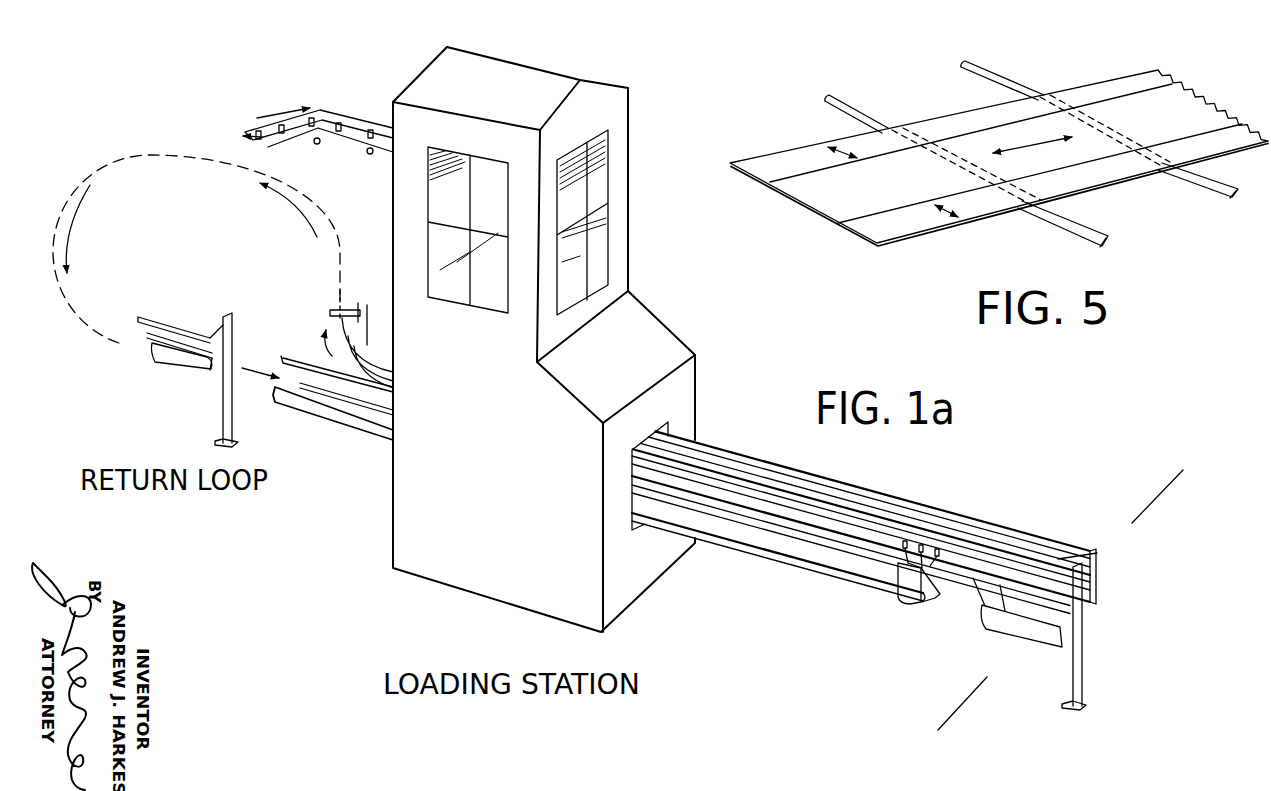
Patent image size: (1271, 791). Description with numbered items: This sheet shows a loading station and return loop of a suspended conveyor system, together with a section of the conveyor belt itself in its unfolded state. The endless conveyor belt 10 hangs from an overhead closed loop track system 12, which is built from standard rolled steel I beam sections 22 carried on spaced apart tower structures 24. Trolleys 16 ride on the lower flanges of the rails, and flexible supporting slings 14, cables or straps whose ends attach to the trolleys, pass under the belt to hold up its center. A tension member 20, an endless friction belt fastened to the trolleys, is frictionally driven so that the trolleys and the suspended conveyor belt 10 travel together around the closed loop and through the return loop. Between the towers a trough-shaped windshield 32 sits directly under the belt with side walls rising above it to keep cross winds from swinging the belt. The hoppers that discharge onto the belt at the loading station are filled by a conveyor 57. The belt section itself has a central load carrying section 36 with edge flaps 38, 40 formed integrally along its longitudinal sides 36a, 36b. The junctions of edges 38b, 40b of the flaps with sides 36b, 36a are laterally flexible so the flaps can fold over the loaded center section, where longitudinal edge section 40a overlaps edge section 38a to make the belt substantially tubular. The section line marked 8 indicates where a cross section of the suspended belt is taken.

In FIG. 1a, the section line 8- 8 is at (1137, 484).
In FIG. 1a, the endless conveyor belt 10 is at (174, 364).
In FIG. 1a, the overhead closed loop track system 12 is at (905, 497).
In FIG. 1a, the supporting slings 14 is at (897, 565).
In FIG. 5, the supporting slings 14 is at (1078, 231).
In FIG. 1a, the trolleys 16 is at (929, 540).
In FIG. 1a, the tension member 20 is at (147, 334).
In FIG. 1a, the I beam sections 22 is at (147, 317).
In FIG. 1a, the tower structures 24 is at (223, 403).
In FIG. 1a, the trough-shaped windshield 32 is at (899, 594).
In FIG. 5, the central load carrying section 36 is at (812, 201).
In FIG. 5, the longitudinal side of center section 36a is at (853, 219).
In FIG. 5, the longitudinal side of center section 36b is at (777, 192).
In FIG. 5, the edge flap 38 is at (950, 120).
In FIG. 5, the longitudinal edge section 38a is at (918, 122).
In FIG. 5, the edge of edge flap 38b is at (788, 178).
In FIG. 5, the edge flap 40 is at (1112, 172).
In FIG. 5, the longitudinal edge section 40a is at (1070, 193).
In FIG. 5, the edge of edge flap 40b is at (905, 214).
In FIG. 1a, the conveyor 57 is at (360, 123).